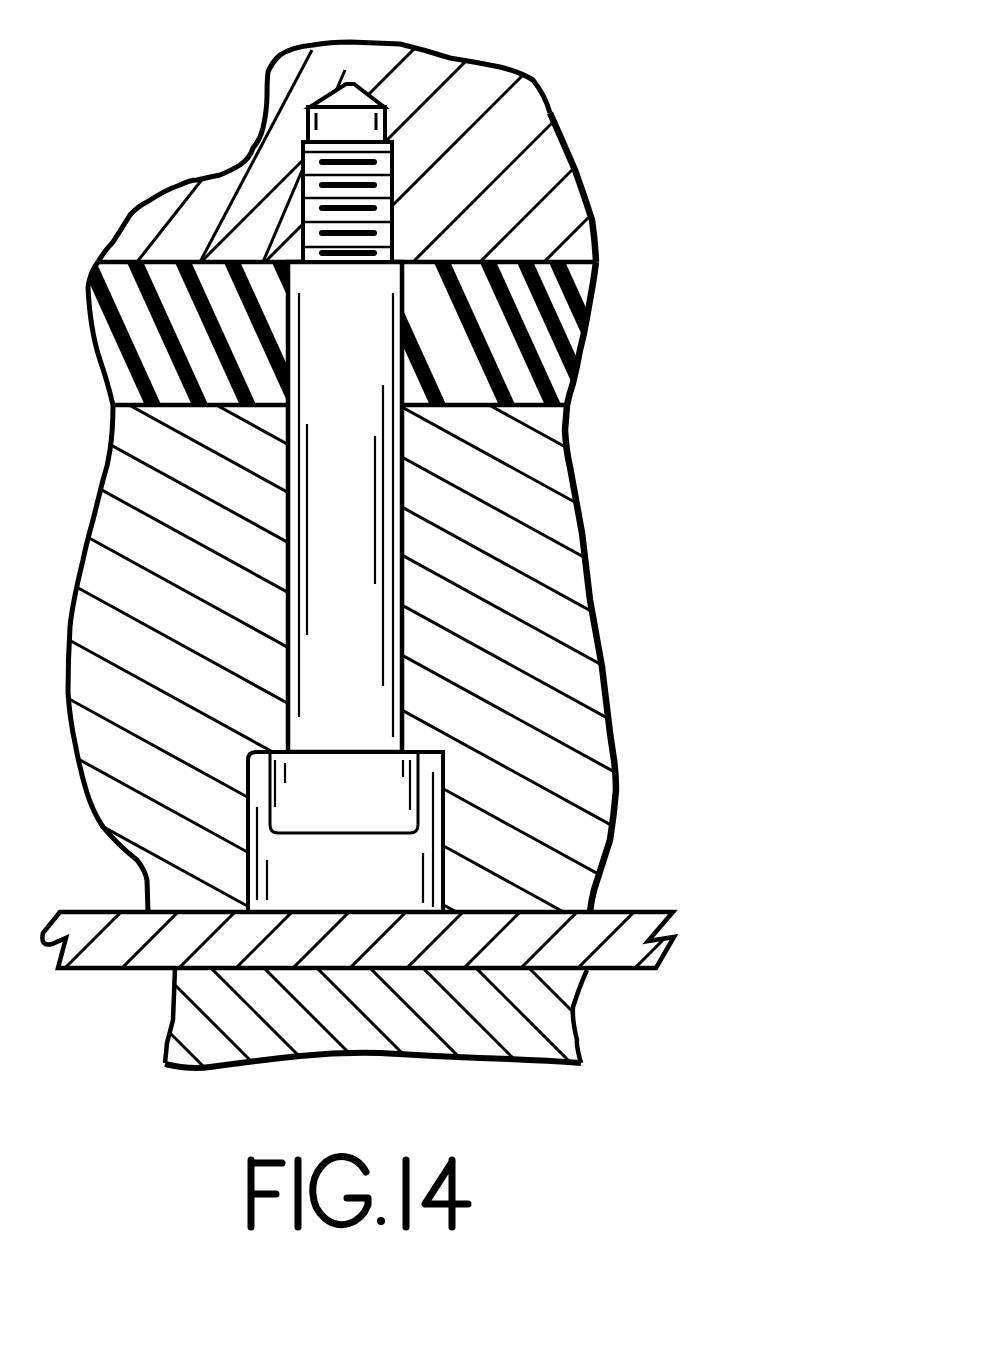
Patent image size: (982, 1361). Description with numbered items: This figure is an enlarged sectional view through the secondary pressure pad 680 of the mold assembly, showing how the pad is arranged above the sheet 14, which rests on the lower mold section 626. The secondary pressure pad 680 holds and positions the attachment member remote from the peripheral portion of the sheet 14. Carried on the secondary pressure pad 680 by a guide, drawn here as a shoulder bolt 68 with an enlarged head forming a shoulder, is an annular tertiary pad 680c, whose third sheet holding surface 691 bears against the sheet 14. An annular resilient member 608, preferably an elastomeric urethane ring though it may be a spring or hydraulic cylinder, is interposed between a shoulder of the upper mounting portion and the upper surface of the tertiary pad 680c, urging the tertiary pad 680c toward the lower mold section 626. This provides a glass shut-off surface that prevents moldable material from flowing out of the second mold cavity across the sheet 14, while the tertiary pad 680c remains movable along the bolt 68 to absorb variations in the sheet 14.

The secondary pressure pad 680 is at (537, 165).
The annular resilient member 608 is at (553, 284).
The bolt 68 is at (456, 508).
The annular tertiary pad 680c is at (547, 613).
The third sheet holding surface 691 is at (530, 915).
The sheet 14 is at (678, 947).
The lower mold section 626 is at (533, 1037).